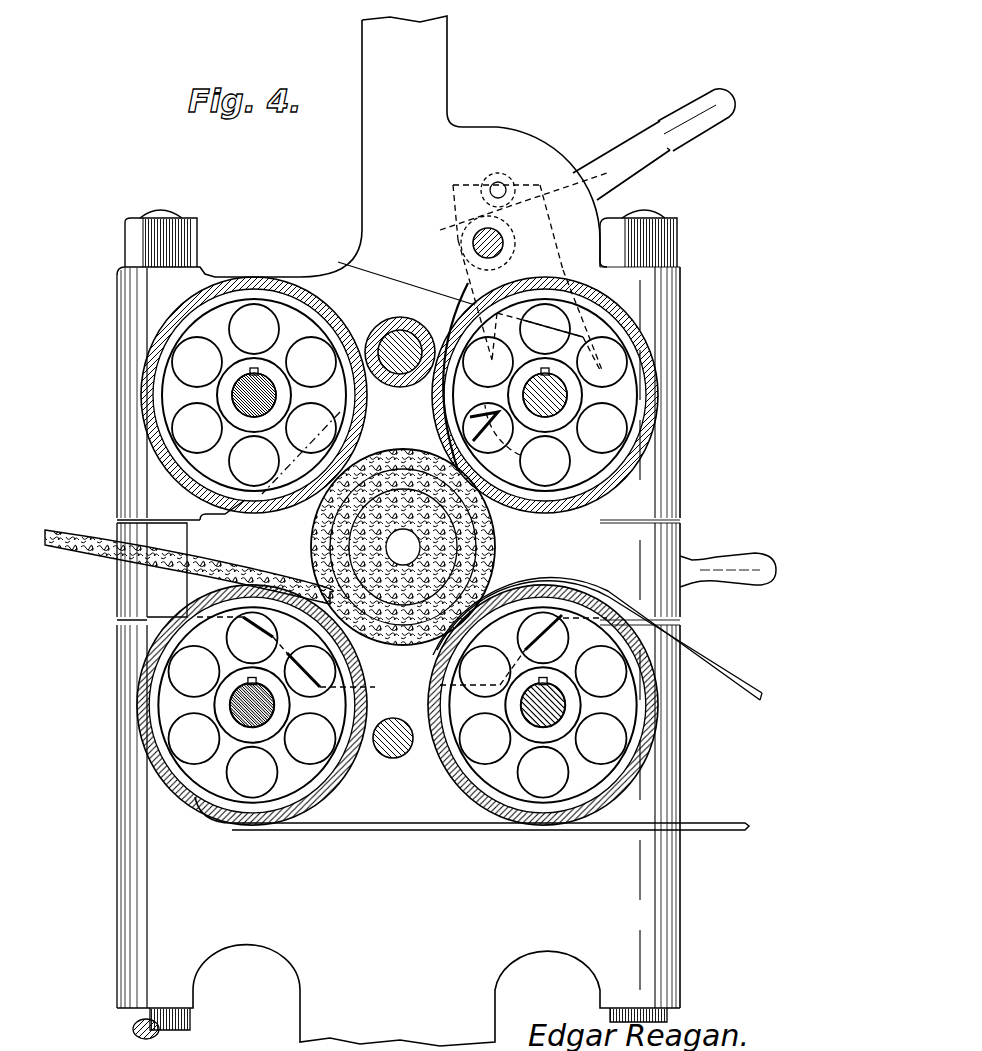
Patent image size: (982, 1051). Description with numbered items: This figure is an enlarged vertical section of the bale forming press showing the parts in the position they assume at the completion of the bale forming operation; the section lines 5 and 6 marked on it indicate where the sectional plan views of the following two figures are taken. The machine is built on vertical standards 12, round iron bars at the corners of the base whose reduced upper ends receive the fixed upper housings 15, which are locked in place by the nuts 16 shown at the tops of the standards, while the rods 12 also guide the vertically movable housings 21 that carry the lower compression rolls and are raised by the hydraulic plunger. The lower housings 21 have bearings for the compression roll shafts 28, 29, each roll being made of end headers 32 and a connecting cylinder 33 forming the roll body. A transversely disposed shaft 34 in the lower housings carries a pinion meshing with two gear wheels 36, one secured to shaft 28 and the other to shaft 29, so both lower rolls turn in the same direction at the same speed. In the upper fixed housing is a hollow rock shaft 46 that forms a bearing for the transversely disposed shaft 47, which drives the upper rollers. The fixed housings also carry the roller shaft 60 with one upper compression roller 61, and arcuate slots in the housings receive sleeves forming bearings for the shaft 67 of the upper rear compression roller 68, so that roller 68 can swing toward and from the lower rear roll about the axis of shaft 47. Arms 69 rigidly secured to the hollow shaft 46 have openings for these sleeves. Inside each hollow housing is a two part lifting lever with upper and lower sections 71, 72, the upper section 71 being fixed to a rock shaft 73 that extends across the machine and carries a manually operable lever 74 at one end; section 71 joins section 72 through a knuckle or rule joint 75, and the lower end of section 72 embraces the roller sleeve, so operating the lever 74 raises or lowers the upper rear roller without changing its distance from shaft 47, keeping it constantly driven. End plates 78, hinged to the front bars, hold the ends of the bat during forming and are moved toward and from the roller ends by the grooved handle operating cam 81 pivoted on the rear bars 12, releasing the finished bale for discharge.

The section line 5- 5 is at (600, 243).
The section line 6- 6 is at (117, 521).
The vertical standards 12 is at (134, 1020).
The housings 15 is at (137, 457).
The bearing nuts 16 is at (196, 239).
The vertically movable housings 21 is at (398, 960).
The compression roll shaft 28 is at (241, 720).
The compression roll shaft 29 is at (522, 700).
The end headers 32 is at (300, 777).
The connecting cylinder 33 is at (432, 668).
The transversely disposed shaft 34 is at (393, 760).
The gear wheels 36 is at (609, 831).
The hollow rock shaft 46 is at (400, 318).
The transversely disposed shaft 47 is at (442, 418).
The roller shaft 60 is at (236, 394).
The upper compression roller 61 is at (160, 333).
The shaft 67 is at (525, 394).
The upper compression roller 68 is at (660, 389).
The arms 69 is at (455, 312).
The upper section of lifting lever 71 is at (513, 314).
The lower section of lifting lever 72 is at (546, 300).
The rock shaft 73 is at (474, 253).
The manually operable lever 74 is at (636, 147).
The knuckle or rule joint 75 is at (500, 182).
The end plates 78 is at (189, 552).
The handle operating cam 81 is at (718, 562).